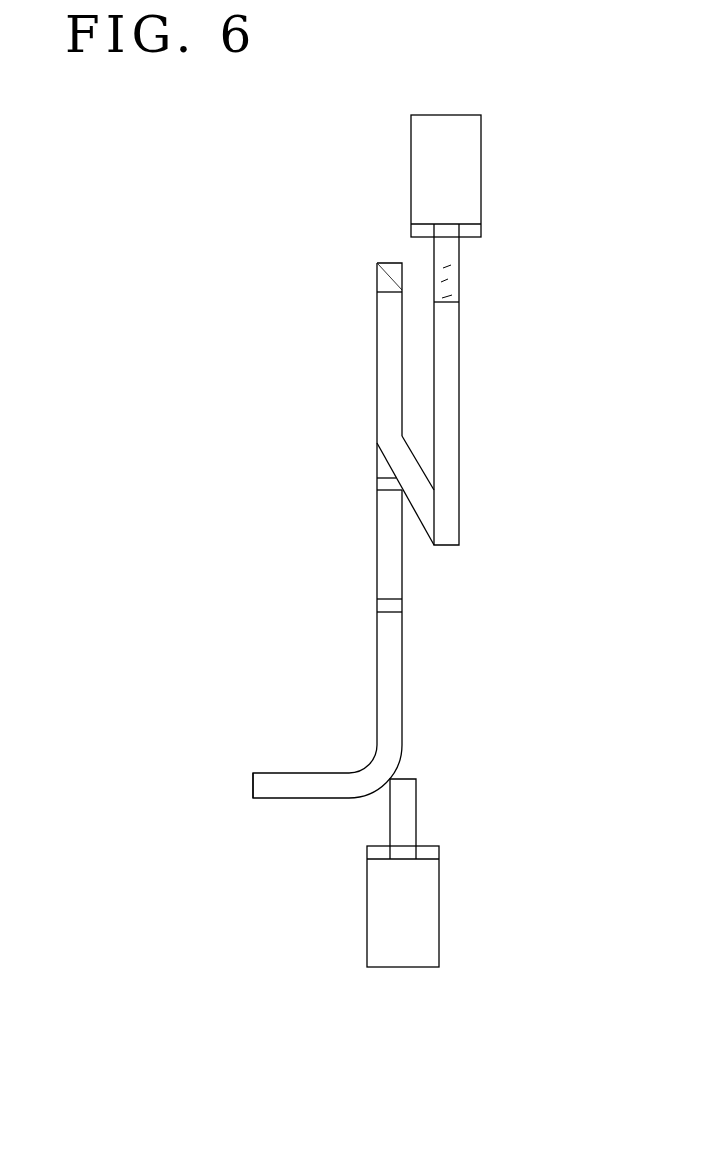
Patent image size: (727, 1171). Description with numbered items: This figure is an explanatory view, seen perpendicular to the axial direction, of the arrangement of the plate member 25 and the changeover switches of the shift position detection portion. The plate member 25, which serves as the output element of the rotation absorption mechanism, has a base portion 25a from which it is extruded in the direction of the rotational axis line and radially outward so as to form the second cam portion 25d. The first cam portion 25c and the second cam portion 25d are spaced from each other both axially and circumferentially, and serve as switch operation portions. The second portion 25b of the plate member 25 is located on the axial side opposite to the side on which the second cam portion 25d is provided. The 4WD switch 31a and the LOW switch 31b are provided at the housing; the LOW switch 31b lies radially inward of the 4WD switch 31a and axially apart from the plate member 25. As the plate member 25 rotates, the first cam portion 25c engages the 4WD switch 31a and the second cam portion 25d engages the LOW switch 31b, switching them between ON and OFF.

The plate member 25 is at (534, 478).
The base portion 25a is at (390, 635).
The second portion 25b is at (288, 786).
The first cam portion 25c is at (383, 260).
The second cam portion 25d is at (460, 284).
The 4WD switch 31a is at (408, 820).
The LOW switch 31b is at (455, 253).